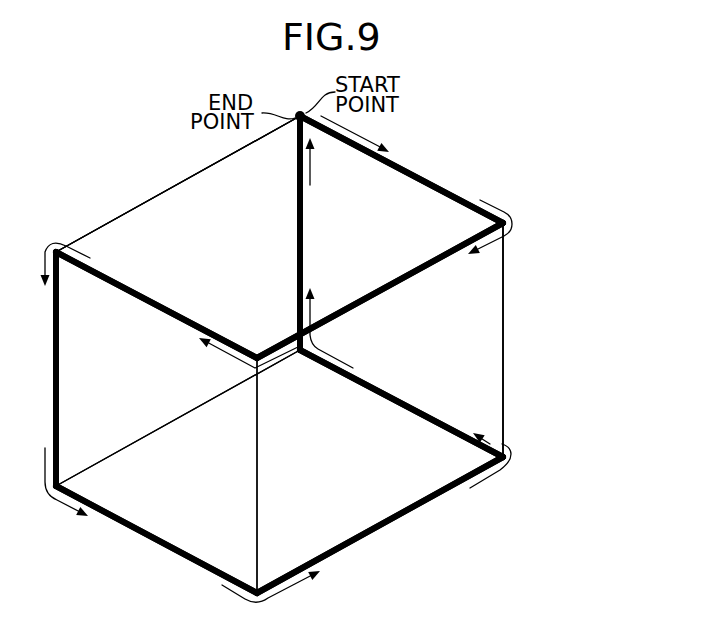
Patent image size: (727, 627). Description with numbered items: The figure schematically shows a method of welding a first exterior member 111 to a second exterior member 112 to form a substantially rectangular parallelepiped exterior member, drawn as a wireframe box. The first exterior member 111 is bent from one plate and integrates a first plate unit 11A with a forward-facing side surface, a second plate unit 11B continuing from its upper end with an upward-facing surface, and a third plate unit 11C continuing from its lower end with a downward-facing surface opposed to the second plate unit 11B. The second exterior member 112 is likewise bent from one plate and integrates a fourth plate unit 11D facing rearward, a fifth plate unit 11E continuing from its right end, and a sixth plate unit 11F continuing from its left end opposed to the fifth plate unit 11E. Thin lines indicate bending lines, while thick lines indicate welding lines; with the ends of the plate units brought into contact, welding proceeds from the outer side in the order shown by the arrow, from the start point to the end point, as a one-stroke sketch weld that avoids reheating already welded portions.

The first exterior member 111 is at (165, 186).
The second exterior member 112 is at (518, 370).
The first plate unit 11A is at (135, 377).
The second plate unit 11B is at (243, 270).
The third plate unit 11C is at (333, 470).
The fourth plate unit 11D is at (390, 425).
The fifth plate unit 11E is at (450, 313).
The sixth plate unit 11F is at (198, 470).